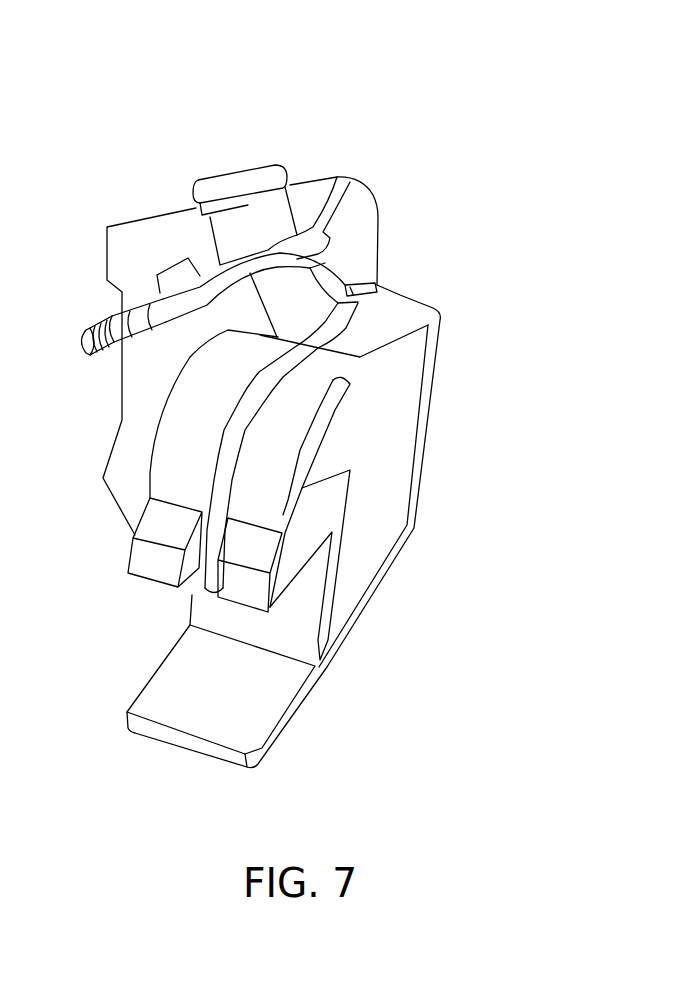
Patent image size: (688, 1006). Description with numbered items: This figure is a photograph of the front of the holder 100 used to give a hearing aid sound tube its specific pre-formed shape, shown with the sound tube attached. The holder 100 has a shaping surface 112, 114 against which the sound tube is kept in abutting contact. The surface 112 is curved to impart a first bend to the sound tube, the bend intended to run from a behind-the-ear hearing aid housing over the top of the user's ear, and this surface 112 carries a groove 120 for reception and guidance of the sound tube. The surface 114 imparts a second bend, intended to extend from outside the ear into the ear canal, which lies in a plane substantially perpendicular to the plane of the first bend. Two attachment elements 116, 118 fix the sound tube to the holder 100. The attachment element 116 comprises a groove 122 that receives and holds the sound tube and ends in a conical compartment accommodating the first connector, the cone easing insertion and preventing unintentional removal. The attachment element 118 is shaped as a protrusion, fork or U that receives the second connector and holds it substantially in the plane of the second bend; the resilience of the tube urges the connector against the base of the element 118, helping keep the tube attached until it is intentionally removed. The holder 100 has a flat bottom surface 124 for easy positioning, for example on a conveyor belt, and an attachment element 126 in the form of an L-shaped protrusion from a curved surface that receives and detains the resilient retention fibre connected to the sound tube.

The holder 100 is at (150, 67).
The surface 112 is at (175, 437).
The surface 114 is at (362, 286).
The attachment element 116 is at (287, 555).
The attachment element 118 is at (138, 258).
The groove 120 is at (270, 373).
The groove 122 is at (207, 590).
The flat bottom surface 124 is at (330, 665).
The attachment element 126 is at (253, 182).